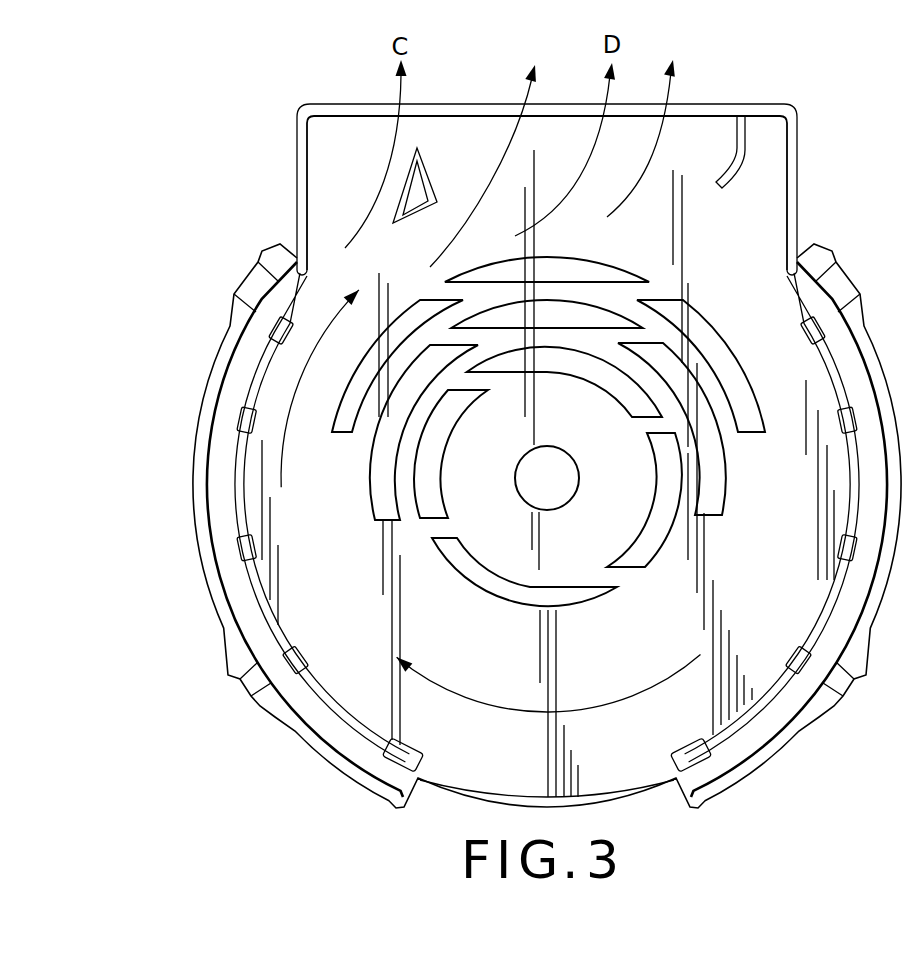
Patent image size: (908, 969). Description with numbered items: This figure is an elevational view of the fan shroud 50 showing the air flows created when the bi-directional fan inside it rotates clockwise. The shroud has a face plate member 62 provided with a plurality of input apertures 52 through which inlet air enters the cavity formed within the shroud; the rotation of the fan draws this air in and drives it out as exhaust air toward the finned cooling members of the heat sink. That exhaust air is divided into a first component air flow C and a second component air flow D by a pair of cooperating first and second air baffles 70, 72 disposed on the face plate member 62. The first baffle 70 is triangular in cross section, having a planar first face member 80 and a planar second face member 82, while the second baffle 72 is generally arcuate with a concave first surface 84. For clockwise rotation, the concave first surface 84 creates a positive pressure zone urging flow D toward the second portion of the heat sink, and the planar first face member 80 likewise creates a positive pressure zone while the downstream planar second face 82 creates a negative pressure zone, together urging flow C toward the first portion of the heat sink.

The fan shroud 50 is at (205, 366).
The input apertures 52 is at (452, 540).
The face plate member 62 is at (617, 655).
The first air baffle 70 is at (417, 148).
The second air baffle 72 is at (740, 168).
The planar first face member 80 is at (398, 197).
The planar second face member 82 is at (427, 173).
The concave first surface 84 is at (735, 145).